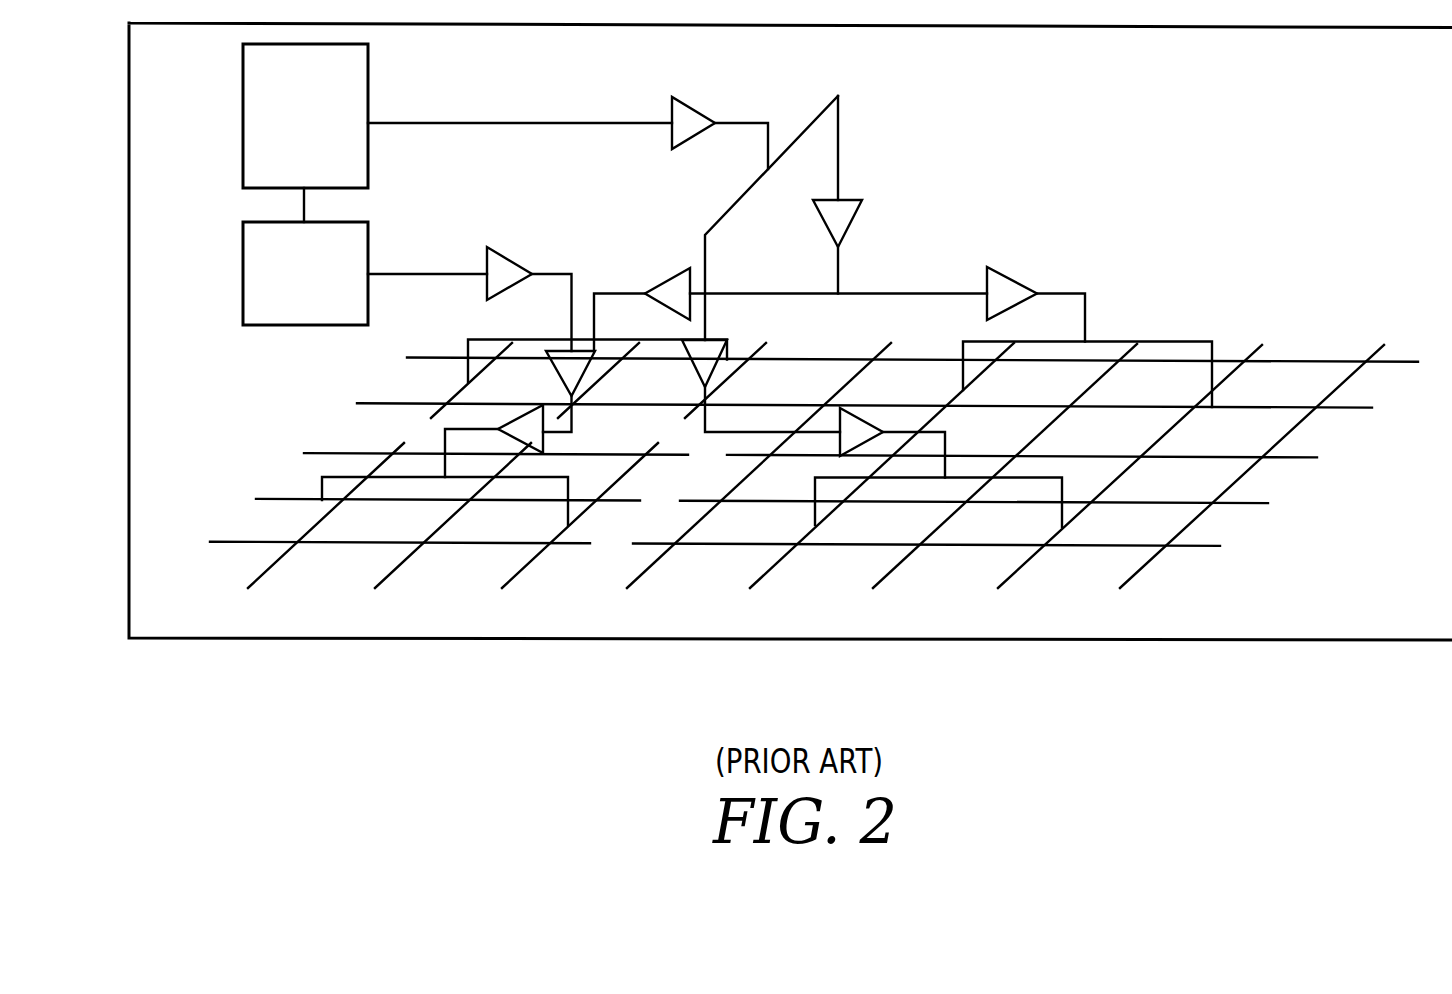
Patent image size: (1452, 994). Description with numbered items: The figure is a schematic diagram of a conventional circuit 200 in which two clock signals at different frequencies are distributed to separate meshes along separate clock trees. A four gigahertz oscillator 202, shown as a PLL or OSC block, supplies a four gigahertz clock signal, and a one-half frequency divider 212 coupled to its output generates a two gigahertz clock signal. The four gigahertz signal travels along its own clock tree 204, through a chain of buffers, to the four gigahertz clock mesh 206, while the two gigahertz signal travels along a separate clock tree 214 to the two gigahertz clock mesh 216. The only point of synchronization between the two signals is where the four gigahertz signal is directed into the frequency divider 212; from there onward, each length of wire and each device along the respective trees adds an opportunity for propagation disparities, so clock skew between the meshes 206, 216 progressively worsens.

The circuit 200 is at (1333, 122).
The 4 GHz oscillator 202 is at (368, 66).
The clock tree 204 is at (847, 124).
The 4 GHz clock mesh 206 is at (1304, 360).
The ½ frequency divider 212 is at (331, 327).
The clock tree 214 is at (548, 268).
The 2 GHz clock mesh 216 is at (292, 522).